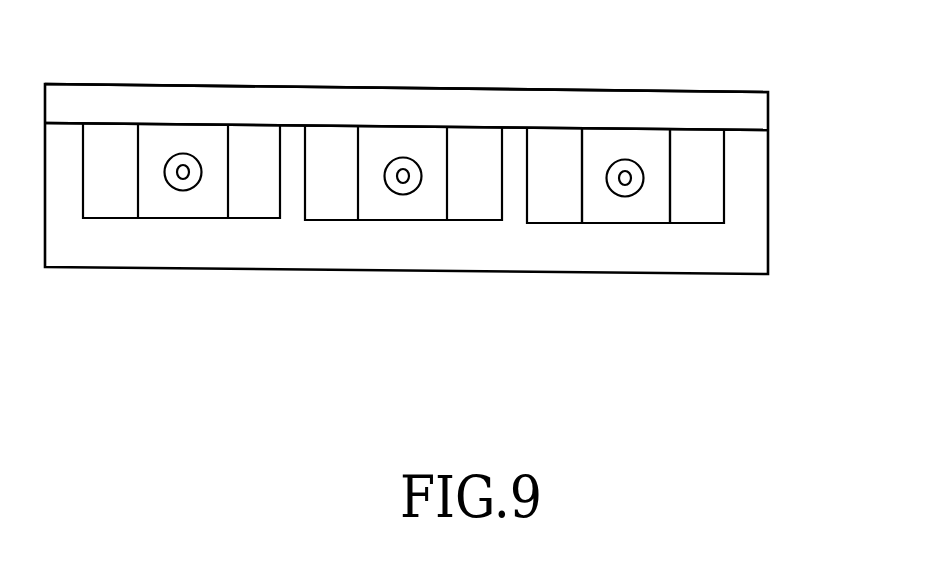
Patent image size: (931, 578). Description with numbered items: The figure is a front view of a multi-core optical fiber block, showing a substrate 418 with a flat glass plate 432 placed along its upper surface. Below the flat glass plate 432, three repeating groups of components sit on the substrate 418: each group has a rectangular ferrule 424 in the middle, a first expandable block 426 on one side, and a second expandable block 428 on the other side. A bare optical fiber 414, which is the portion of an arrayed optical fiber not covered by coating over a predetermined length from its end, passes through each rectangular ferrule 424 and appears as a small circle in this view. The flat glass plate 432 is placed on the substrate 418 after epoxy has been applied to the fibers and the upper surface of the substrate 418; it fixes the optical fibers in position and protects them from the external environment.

The substrate 418 is at (773, 212).
The flat glass plate 432 is at (665, 98).
The second expandable block 428 is at (543, 214).
The rectangular ferrule 424 is at (642, 212).
The first expandable block 426 is at (703, 214).
The bare optical fiber 414 is at (613, 193).